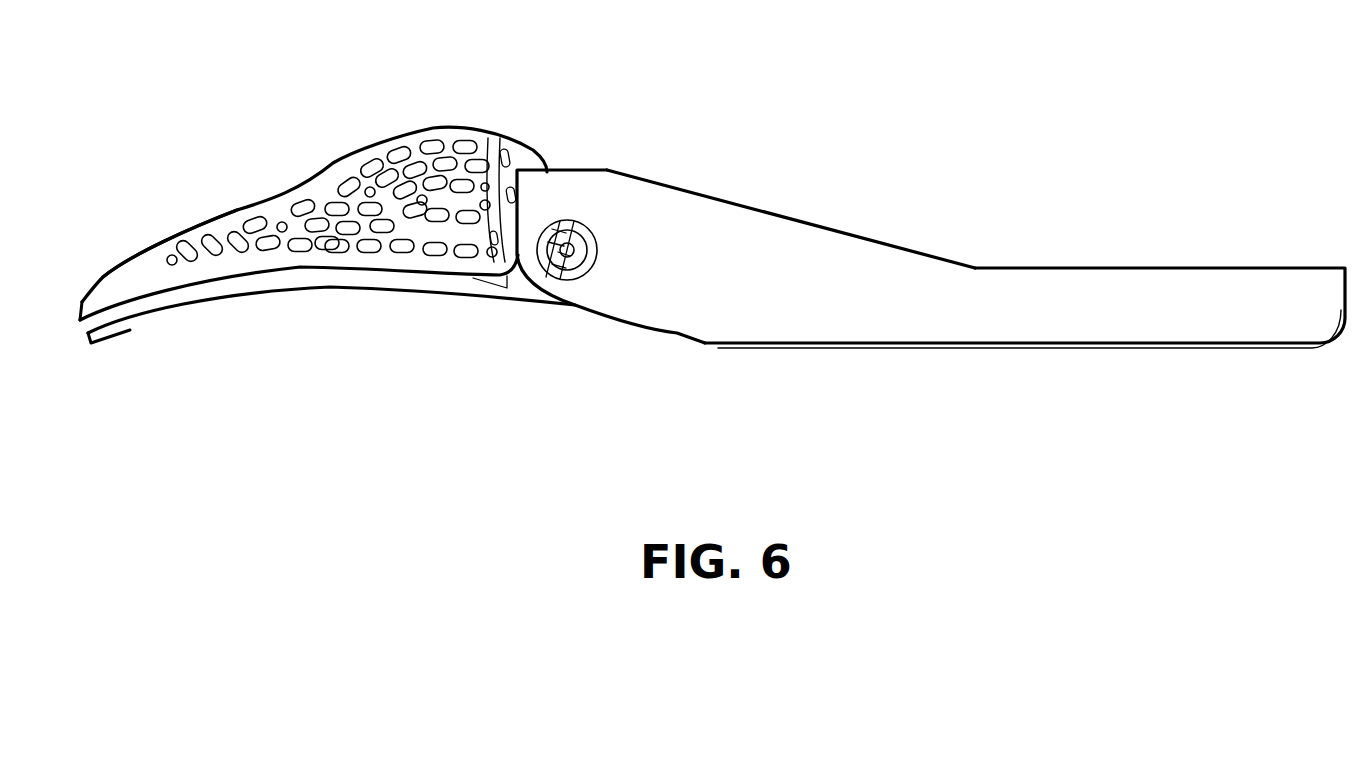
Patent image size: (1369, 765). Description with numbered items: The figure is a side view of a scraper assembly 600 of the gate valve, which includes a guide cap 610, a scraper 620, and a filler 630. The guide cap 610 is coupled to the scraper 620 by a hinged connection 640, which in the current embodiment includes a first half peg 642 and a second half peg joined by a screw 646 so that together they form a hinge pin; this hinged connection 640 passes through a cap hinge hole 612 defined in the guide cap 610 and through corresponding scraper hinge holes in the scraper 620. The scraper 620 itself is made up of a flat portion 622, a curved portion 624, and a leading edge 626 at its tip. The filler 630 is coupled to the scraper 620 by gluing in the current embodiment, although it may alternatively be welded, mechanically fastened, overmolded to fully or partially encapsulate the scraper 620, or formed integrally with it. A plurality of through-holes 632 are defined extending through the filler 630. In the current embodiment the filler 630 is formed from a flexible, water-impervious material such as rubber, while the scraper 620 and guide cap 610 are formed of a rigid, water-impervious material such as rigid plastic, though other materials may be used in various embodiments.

The scraper assembly 600 is at (992, 207).
The guide cap 610 is at (1198, 307).
The cap hinge hole 612 is at (597, 255).
The scraper 620 is at (158, 303).
The flat portion 622 is at (440, 295).
The curved portion 624 is at (255, 293).
The leading edge 626 is at (91, 345).
The filler 630 is at (142, 265).
The through-holes 632 is at (462, 145).
The hinged connection 640 is at (577, 238).
The first half peg 642 is at (558, 260).
The screw 646 is at (567, 248).